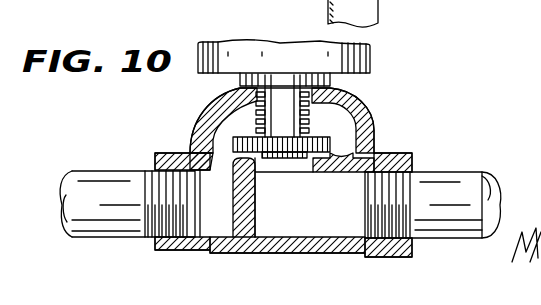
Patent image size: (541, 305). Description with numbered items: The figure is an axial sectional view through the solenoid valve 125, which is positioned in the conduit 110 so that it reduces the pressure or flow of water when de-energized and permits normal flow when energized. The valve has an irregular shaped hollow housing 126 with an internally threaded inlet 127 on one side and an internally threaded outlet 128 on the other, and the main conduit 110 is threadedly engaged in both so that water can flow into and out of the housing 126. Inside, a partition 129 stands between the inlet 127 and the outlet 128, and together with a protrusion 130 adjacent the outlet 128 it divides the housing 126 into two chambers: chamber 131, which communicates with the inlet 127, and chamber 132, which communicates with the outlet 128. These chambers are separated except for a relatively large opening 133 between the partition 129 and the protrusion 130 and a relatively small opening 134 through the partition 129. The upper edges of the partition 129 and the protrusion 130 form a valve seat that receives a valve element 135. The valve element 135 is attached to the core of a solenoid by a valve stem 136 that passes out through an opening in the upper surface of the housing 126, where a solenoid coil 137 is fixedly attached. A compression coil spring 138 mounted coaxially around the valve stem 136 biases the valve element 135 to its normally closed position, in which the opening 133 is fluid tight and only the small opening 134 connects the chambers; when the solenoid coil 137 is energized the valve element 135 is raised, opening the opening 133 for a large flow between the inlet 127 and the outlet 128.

The conduit 110 is at (88, 180).
The solenoid valve 125 is at (380, 113).
The hollow housing 126 is at (374, 131).
The internally threaded inlet 127 is at (167, 173).
The internally threaded outlet 128 is at (423, 176).
The partition 129 is at (318, 175).
The protrusion 130 is at (340, 173).
The chamber 131 is at (217, 226).
The chamber 132 is at (337, 251).
The relatively large opening 133 is at (337, 250).
The relatively small opening 134 is at (236, 207).
The valve element 135 is at (355, 104).
The valve stem 136 is at (285, 96).
The solenoid coil 137 is at (360, 58).
The compression coil spring 138 is at (257, 127).